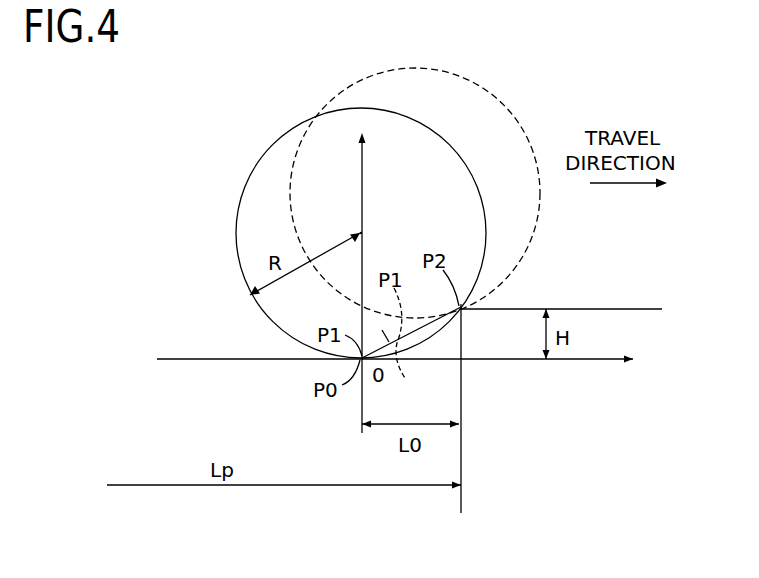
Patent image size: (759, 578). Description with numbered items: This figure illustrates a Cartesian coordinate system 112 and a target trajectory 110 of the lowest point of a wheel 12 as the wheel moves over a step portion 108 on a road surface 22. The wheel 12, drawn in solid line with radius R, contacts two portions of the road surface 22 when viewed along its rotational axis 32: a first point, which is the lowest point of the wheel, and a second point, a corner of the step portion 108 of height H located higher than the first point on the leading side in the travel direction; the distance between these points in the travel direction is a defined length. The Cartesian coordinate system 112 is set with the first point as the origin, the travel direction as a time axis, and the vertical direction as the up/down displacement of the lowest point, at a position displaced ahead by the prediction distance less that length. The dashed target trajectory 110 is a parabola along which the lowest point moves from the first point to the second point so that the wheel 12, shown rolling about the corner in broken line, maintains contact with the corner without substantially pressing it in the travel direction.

The wheel 12 is at (435, 130).
The road surface 22 is at (210, 358).
The rotational axis 32 is at (363, 233).
The step portion 108 is at (473, 333).
The target trajectory 110 is at (421, 344).
The Cartesian coordinate system 112 is at (589, 375).